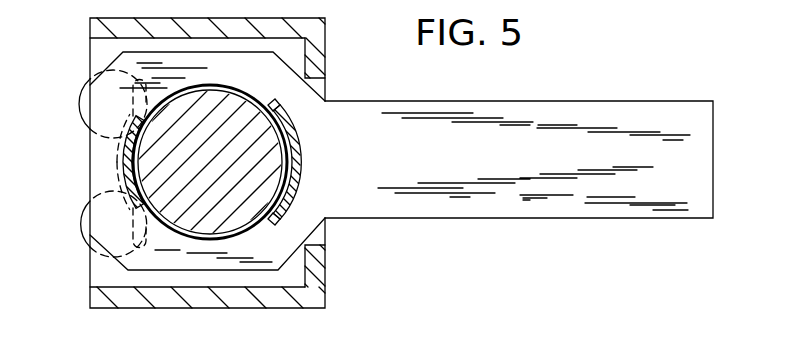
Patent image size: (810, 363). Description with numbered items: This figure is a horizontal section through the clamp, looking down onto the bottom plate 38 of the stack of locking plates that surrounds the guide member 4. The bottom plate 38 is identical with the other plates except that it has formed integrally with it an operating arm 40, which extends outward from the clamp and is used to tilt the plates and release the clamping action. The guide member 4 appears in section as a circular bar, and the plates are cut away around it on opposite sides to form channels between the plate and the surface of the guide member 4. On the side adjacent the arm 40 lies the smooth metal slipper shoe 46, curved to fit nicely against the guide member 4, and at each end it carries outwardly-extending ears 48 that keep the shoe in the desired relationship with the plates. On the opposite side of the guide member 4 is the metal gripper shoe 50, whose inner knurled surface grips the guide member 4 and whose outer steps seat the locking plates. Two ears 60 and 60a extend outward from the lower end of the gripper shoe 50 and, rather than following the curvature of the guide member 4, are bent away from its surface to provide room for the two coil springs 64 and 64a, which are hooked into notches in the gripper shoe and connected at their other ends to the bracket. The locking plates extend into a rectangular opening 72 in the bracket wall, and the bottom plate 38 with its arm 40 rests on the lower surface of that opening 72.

The guide member 4 is at (205, 222).
The bottom plate 38 is at (266, 73).
The operating arm 40 is at (467, 205).
The slipper shoe 46 is at (292, 150).
The ear 48 is at (292, 110).
The gripper shoe 50 is at (118, 164).
The ear 60 is at (92, 241).
The ear 60a is at (83, 100).
The coil spring 64 is at (89, 84).
The coil spring 64a is at (89, 212).
The rectangular opening 72 is at (320, 85).